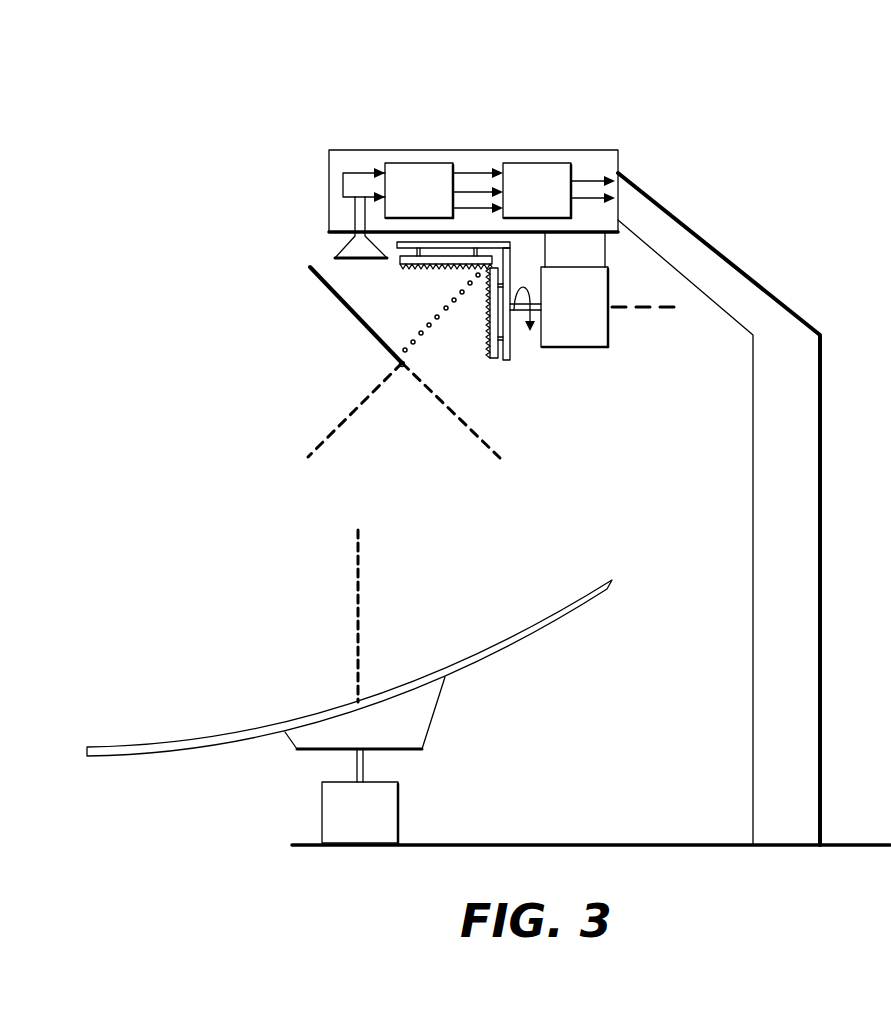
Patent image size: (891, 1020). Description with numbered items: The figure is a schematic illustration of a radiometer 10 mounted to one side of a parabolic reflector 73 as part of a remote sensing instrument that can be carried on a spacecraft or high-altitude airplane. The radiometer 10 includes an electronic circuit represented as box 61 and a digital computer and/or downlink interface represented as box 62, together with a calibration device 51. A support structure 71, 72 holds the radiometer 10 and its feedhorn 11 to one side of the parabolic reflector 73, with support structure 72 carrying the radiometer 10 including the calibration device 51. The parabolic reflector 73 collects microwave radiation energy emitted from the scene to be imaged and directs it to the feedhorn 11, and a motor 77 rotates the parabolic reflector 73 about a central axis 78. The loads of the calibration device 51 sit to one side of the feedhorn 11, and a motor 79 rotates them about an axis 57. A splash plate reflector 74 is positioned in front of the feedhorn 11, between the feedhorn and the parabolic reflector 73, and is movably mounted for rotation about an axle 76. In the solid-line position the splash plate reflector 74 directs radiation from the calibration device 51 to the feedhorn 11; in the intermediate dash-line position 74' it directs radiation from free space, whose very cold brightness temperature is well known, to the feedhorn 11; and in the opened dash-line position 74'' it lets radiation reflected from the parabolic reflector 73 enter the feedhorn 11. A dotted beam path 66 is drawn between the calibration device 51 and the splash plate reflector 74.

The radiometer 10 is at (490, 138).
The electronic circuit 61 is at (411, 163).
The digital computer and/or downlink interface 62 is at (545, 165).
The feedhorn 11 is at (343, 250).
The support structure 72 is at (755, 657).
The support structure 71 is at (580, 843).
The motor 79 is at (568, 336).
The axis 57 is at (652, 308).
The calibration device 51 is at (471, 383).
The light beam 66 is at (447, 307).
The splash plate reflector 74 is at (347, 315).
The axle 76 is at (405, 368).
The intermediate position of splash plate reflector 74' is at (357, 424).
The opened position of splash plate reflector 74'' is at (452, 424).
The central axis 78 is at (360, 617).
The parabolic reflector 73 is at (500, 660).
The motor 77 is at (395, 808).